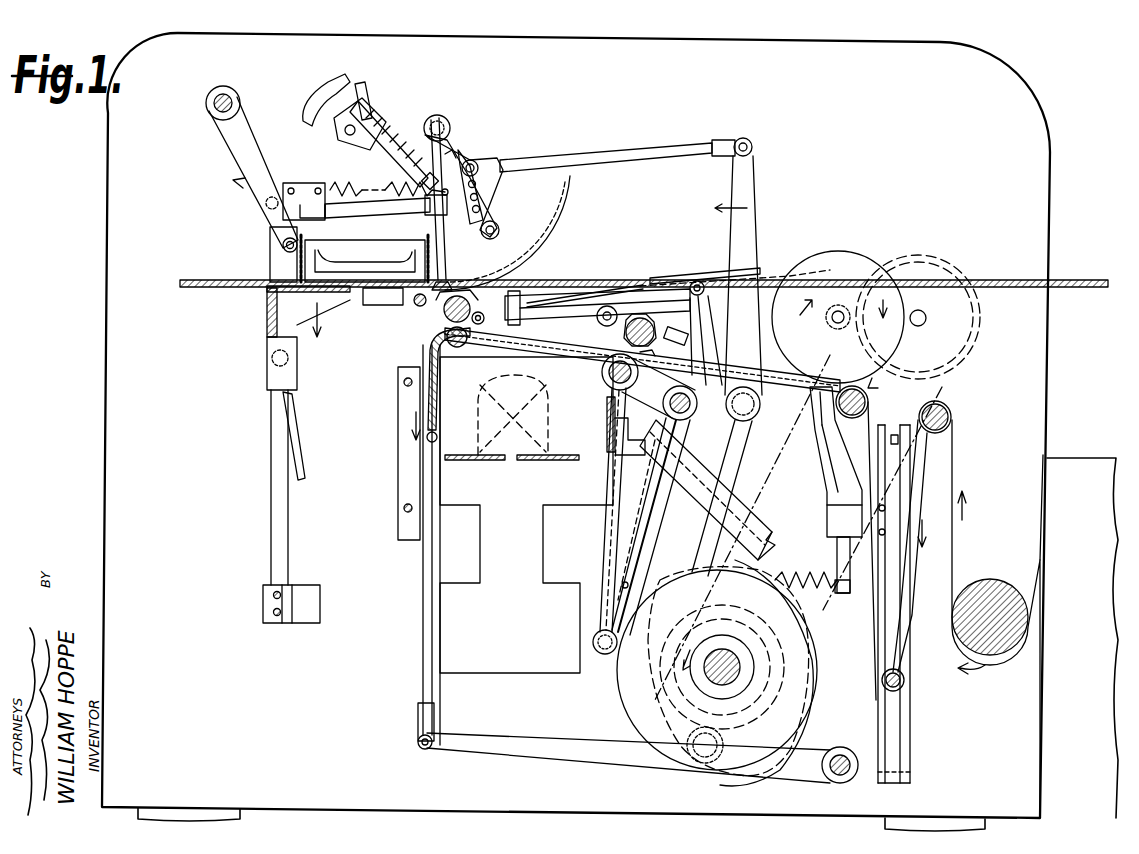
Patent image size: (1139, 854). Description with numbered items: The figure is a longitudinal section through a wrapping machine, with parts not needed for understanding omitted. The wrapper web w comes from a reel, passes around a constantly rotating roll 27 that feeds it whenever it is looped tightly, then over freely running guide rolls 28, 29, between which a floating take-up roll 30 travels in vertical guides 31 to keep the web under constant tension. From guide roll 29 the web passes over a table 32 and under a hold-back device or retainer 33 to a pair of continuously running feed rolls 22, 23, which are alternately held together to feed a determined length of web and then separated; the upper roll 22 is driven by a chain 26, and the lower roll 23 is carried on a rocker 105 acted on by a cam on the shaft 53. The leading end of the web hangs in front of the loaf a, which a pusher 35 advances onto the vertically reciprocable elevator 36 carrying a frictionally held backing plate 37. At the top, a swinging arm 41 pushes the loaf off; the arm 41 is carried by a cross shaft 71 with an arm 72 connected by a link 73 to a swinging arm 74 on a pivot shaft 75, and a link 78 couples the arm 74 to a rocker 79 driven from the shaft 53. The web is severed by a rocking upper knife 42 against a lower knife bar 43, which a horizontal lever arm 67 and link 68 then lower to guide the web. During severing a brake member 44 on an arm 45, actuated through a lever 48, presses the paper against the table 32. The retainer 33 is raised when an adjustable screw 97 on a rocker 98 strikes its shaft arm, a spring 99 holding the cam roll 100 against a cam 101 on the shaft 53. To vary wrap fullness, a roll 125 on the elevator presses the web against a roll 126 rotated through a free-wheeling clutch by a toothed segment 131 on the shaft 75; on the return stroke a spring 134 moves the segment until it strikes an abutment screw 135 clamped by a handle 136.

The upper feed roll 22 is at (442, 312).
The lower feed roll 23 is at (457, 348).
The chain 26 is at (798, 264).
The constantly rotating roll 27 is at (995, 585).
The guide roll 28 is at (951, 414).
The guide roll 29 is at (870, 400).
The floating take-up roll 30 is at (903, 688).
The vertical guides 31 is at (888, 755).
The table 32 is at (729, 481).
The hold-back device or retainer 33 is at (602, 364).
The pusher 35 is at (604, 455).
The elevator or carrier 36 is at (238, 284).
The backing plate 37 is at (398, 272).
The swinging arm 41 is at (250, 158).
The upper knife 42 is at (420, 308).
The lower knife bar 43 is at (438, 420).
The brake member 44 is at (530, 300).
The arm 45 is at (590, 300).
The lever 48 is at (705, 290).
The shaft 53 is at (736, 680).
The horizontal lever arm 67 is at (518, 742).
The link 68 is at (424, 618).
The cross shaft 71 is at (206, 103).
The arm 72 is at (268, 203).
The link 73 is at (378, 218).
The swinging arm 74 is at (472, 160).
The pivot shaft 75 is at (442, 118).
The link 78 is at (578, 160).
The rocker 79 is at (752, 195).
The adjustable screw 97 is at (690, 334).
The rocker 98 is at (632, 553).
The spring 99 is at (815, 580).
The cam roll 100 is at (593, 646).
The cam 101 is at (630, 690).
The rocker 105 is at (752, 540).
The roll 125 is at (398, 305).
The roll 126 is at (445, 280).
The toothed segment 131 is at (570, 196).
The spring 134 is at (345, 186).
The abutment screw 135 is at (420, 160).
The handle 136 is at (368, 92).
The loaf a is at (550, 440).
The web w is at (412, 405).